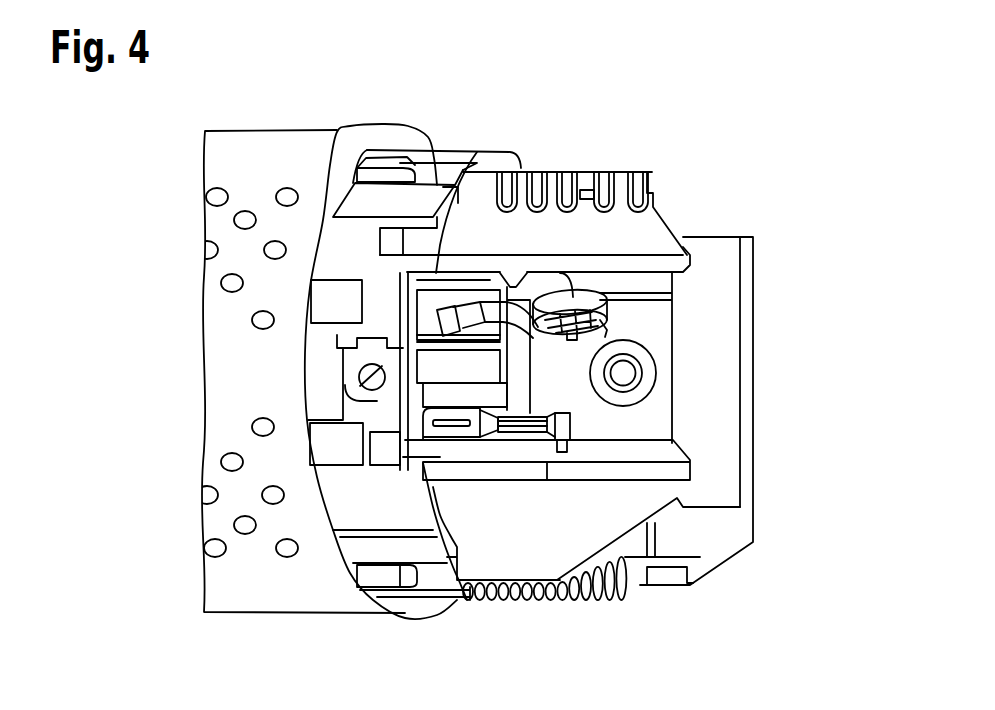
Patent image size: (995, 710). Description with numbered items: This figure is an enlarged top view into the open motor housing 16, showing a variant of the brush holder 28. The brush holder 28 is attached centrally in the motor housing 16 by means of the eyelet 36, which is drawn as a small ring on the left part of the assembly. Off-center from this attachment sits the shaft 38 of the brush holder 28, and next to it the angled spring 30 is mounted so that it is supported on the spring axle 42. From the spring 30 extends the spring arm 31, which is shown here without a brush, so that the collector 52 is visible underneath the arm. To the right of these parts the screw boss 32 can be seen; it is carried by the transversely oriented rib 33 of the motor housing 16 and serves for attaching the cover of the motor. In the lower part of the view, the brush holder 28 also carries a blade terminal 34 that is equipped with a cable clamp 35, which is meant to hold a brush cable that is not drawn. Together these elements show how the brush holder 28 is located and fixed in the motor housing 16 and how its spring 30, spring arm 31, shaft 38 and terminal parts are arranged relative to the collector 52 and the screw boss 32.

The motor housing 16 is at (330, 153).
The brush holder 28 is at (385, 287).
The angled spring 30 is at (575, 300).
The spring arm 31 is at (468, 320).
The screw boss 32 is at (650, 373).
The rib 33 is at (640, 333).
The blade terminal 34 is at (457, 428).
The cable clamp 35 is at (600, 422).
The eyelet 36 is at (357, 380).
The shaft 38 is at (430, 303).
The spring axle 42 is at (607, 335).
The collector 52 is at (508, 415).